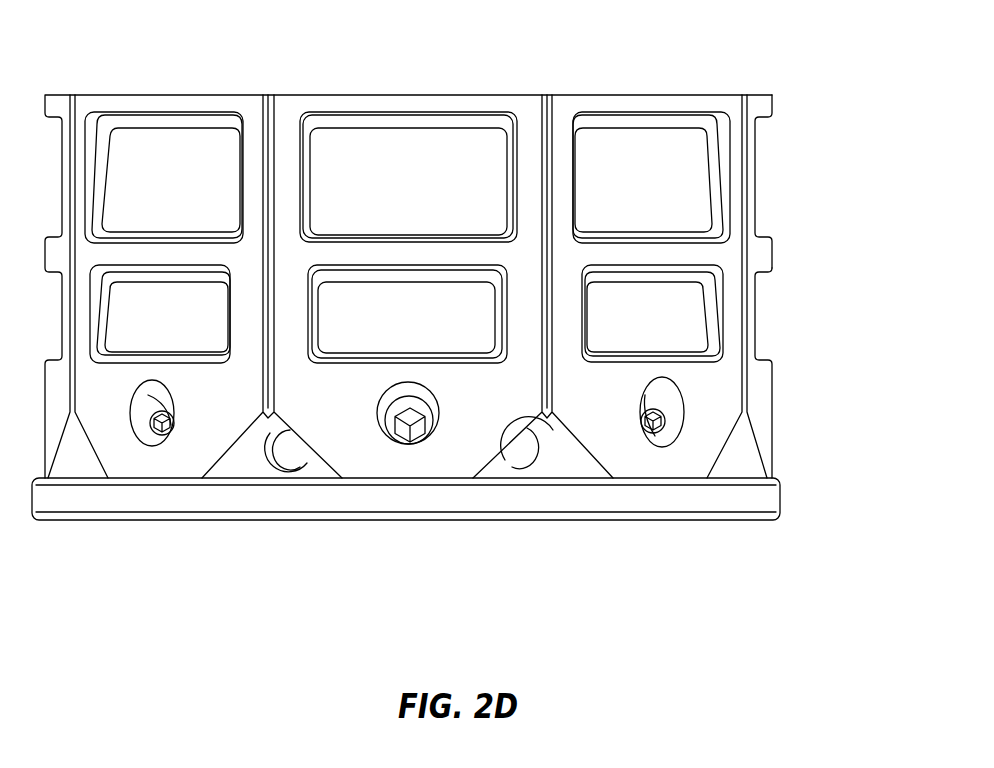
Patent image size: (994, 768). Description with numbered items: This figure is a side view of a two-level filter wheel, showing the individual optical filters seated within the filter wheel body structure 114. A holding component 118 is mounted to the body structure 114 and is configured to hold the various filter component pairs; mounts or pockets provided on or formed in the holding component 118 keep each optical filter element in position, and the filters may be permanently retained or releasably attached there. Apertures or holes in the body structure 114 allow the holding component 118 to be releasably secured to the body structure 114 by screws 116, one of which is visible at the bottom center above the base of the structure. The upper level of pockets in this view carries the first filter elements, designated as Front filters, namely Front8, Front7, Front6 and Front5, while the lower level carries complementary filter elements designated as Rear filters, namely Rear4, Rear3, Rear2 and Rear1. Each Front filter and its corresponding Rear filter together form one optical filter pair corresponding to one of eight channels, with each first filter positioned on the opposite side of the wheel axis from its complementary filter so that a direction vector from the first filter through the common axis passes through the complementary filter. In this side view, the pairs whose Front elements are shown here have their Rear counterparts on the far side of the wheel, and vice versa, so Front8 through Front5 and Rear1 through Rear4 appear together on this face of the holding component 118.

The filter holding component 118 is at (347, 95).
The filter wheel body structure 114 is at (353, 503).
The screws 116 is at (407, 433).
The Front filter element Front8 is at (160, 168).
The Front filter element Front7 is at (457, 160).
The Front filter element Front6 is at (678, 170).
The Front filter element Front5 is at (755, 175).
The Rear filter element Rear1 is at (755, 305).
The Rear filter element Rear2 is at (683, 330).
The Rear filter element Rear3 is at (423, 315).
The Rear filter element Rear4 is at (175, 335).